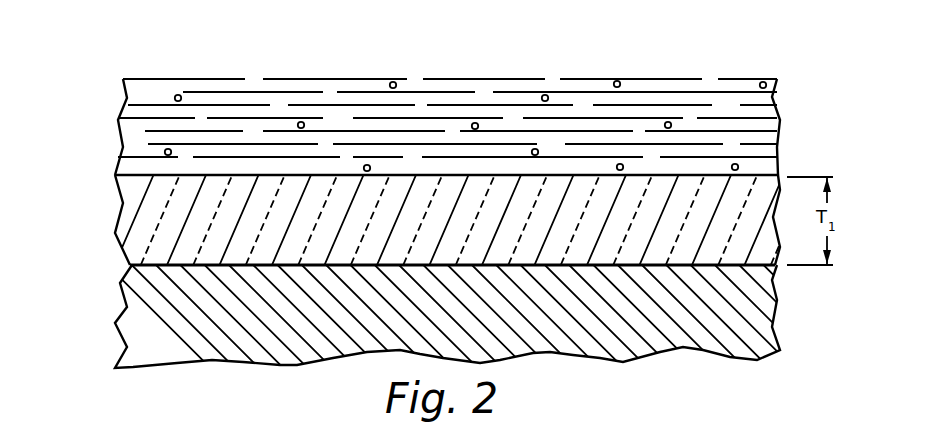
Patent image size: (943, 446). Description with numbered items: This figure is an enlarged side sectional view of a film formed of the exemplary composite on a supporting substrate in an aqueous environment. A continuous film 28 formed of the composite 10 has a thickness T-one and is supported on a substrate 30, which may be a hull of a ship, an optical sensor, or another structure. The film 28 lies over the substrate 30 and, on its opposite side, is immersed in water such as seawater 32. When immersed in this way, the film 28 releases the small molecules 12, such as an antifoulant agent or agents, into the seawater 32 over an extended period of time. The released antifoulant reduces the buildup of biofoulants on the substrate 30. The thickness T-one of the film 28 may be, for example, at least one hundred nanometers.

The composite 10 is at (343, 160).
The small molecules 12 is at (175, 96).
The continuous film 28 is at (198, 222).
The substrate 30 is at (187, 310).
The seawater 32 is at (143, 122).